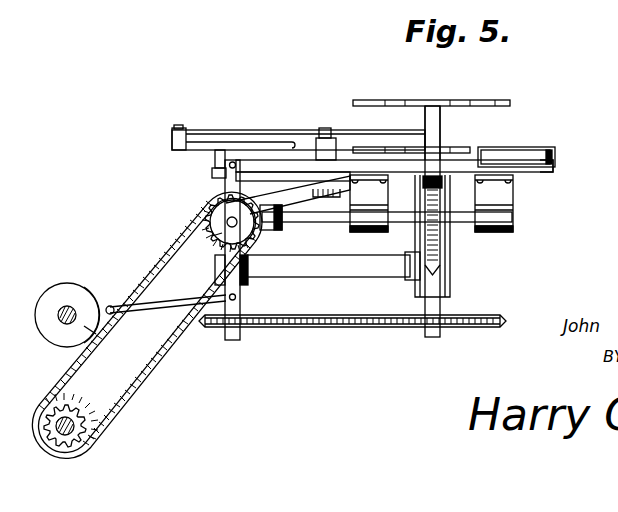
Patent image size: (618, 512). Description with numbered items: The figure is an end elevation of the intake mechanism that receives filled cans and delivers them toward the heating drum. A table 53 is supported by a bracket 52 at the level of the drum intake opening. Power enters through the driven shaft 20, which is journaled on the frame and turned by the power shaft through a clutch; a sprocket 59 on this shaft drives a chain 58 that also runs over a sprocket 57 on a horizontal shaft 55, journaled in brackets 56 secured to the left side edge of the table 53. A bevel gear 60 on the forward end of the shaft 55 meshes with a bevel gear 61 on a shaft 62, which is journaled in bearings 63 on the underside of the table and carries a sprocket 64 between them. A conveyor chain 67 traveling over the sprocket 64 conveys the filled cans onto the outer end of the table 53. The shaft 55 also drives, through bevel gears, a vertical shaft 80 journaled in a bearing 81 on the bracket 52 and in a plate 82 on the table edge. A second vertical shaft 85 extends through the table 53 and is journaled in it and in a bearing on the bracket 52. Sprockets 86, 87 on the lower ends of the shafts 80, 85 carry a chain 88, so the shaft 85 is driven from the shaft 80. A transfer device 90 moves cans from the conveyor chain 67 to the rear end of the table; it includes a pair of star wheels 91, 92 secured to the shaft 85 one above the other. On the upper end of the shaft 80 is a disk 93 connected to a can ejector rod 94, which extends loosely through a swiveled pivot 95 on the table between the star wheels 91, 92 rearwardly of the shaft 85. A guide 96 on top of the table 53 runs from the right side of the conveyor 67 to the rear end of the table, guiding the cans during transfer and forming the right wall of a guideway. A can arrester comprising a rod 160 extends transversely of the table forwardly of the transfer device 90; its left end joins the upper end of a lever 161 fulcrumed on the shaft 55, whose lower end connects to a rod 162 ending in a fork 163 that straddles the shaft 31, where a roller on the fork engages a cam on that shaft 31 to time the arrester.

The driven shaft 20 is at (60, 418).
The shaft 31 is at (66, 306).
The bracket 52 is at (447, 283).
The table 53 is at (550, 168).
The horizontal shaft 55 is at (228, 224).
The brackets 56 is at (298, 192).
The sprocket 57 is at (208, 217).
The chain 58 is at (142, 286).
The sprocket 59 is at (80, 420).
The bevel gear 60 is at (224, 234).
The bevel gear 61 is at (270, 230).
The shaft 62 is at (334, 222).
The bearings 63 is at (372, 222).
The sprocket 64 is at (437, 232).
The conveyor chain 67 is at (410, 272).
The vertical shaft 80 is at (238, 313).
The bearing 81 is at (217, 270).
The plate 82 is at (212, 174).
The vertical shaft 85 is at (430, 122).
The sprocket 86 is at (211, 328).
The sprocket 87 is at (476, 328).
The chain 88 is at (362, 328).
The transfer device 90 is at (449, 221).
The star wheel 91 is at (455, 150).
The star wheel 92 is at (500, 100).
The disk 93 is at (176, 142).
The can ejector rod 94 is at (246, 115).
The swiveled pivot 95 is at (321, 128).
The guide 96 is at (556, 150).
The rod 160 is at (276, 166).
The lever 161 is at (246, 278).
The rod 162 is at (163, 306).
The fork 163 is at (84, 328).